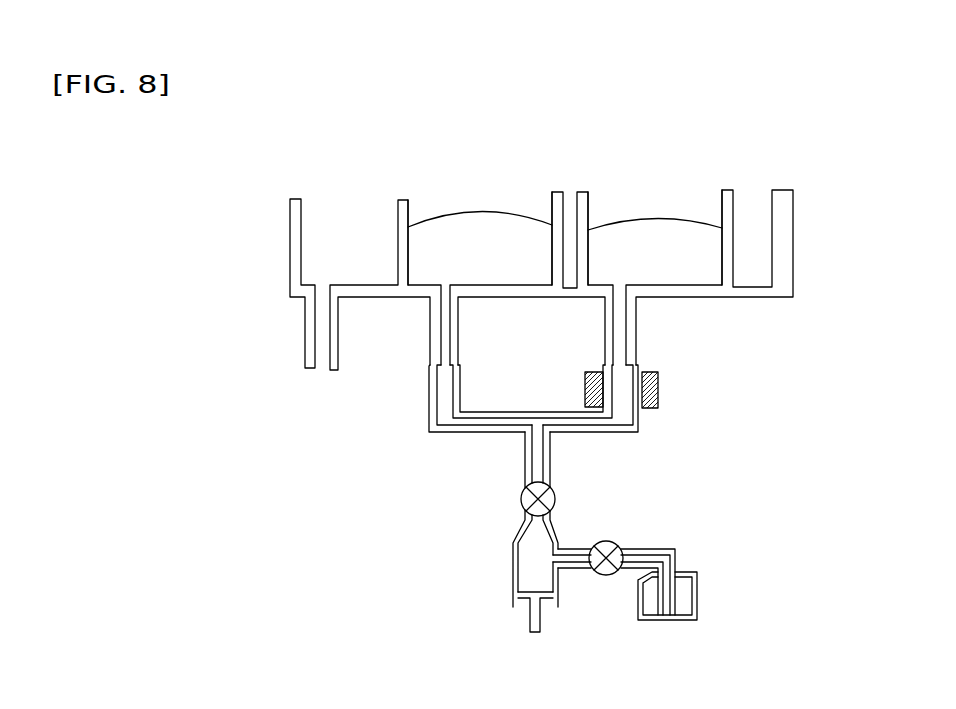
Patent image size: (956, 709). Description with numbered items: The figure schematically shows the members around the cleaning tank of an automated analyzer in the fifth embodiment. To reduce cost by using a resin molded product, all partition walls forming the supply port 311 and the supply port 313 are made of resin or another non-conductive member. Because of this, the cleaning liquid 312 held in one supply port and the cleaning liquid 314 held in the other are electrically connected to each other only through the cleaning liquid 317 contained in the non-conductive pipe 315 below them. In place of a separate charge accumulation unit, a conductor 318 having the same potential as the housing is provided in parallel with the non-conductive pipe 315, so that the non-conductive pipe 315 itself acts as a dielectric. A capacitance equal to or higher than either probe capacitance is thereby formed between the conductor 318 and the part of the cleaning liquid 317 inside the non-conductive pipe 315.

The supply port 311 is at (503, 210).
The cleaning liquid 312 is at (443, 243).
The supply port 313 is at (678, 200).
The cleaning liquid 314 is at (613, 245).
The non-conductive pipe 315 is at (432, 428).
The cleaning liquid 317 is at (622, 313).
The conductor 318 is at (658, 397).